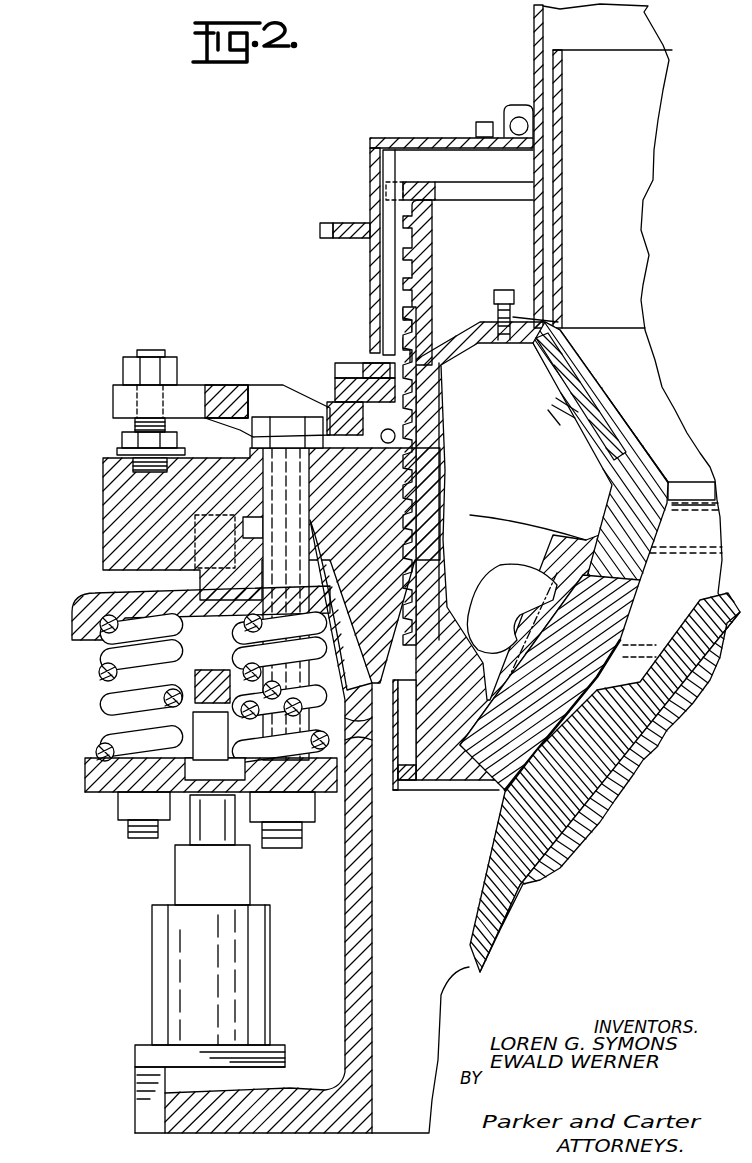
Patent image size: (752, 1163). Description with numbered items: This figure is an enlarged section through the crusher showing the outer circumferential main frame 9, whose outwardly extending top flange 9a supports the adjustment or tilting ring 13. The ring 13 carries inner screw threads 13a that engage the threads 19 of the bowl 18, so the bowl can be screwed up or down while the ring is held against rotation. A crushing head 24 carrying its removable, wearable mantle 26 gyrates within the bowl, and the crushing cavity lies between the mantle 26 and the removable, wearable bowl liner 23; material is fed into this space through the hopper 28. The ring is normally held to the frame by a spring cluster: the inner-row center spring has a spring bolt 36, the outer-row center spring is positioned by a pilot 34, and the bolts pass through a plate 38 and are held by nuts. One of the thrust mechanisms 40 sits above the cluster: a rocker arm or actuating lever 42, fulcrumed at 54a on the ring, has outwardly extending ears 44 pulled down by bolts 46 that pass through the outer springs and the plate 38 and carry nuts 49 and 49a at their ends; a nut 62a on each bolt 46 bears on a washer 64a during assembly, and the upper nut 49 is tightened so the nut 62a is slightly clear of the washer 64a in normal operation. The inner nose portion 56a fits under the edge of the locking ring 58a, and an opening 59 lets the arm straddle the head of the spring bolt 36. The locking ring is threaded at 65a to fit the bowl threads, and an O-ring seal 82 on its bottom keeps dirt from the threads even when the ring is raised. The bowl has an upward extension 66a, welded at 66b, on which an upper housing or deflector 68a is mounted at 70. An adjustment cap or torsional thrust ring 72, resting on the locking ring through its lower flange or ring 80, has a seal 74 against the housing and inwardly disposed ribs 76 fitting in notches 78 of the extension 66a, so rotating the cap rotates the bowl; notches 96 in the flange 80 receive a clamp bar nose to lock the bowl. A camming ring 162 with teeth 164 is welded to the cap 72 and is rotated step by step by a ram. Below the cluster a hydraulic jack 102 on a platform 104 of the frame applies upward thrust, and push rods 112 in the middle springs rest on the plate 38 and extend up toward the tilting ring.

The main frame 9 is at (348, 950).
The top flange 9a is at (76, 624).
The adjustment or tilting ring 13 is at (103, 530).
The inner screw threads 13a is at (459, 616).
The bowl 18 is at (432, 492).
The threads 19 is at (412, 470).
The bowl liner 23 is at (628, 594).
The crushing head 24 is at (610, 770).
The mantle 26 is at (505, 808).
The hopper 28 is at (560, 218).
The pilots 34 is at (134, 744).
The spring bolt 36 is at (282, 832).
The plate 38 is at (92, 772).
The thrust mechanisms 40 is at (108, 398).
The rocker arm or actuating lever 42 is at (224, 396).
The ears 44 is at (188, 386).
The bolts 46 is at (134, 424).
The upper nut 49 is at (125, 366).
The lower nut 49a is at (126, 806).
The fulcrum 54a is at (277, 436).
The inner nose portion 56a is at (356, 378).
The locking ring 58a is at (405, 412).
The opening 59 is at (262, 393).
The nut 62a is at (177, 438).
The washer 64a is at (118, 454).
The threads 65a is at (412, 397).
The bowl extension 66a is at (430, 266).
The weld 66b is at (428, 355).
The upper housing or deflector 68a is at (534, 50).
The mounting 70 is at (510, 272).
The adjustment cap or torsional thrust ring 72 is at (370, 165).
The seal 74 is at (508, 114).
The ribs 76 is at (389, 160).
The notches 78 is at (406, 190).
The flange or ring 80 is at (378, 362).
The seal 82 is at (412, 448).
The notches 96 is at (372, 362).
The hydraulic jacks 102 is at (166, 940).
The platforms 104 is at (142, 1080).
The push rods 112 is at (210, 766).
The camming ring 162 is at (350, 238).
The teeth 164 is at (320, 232).